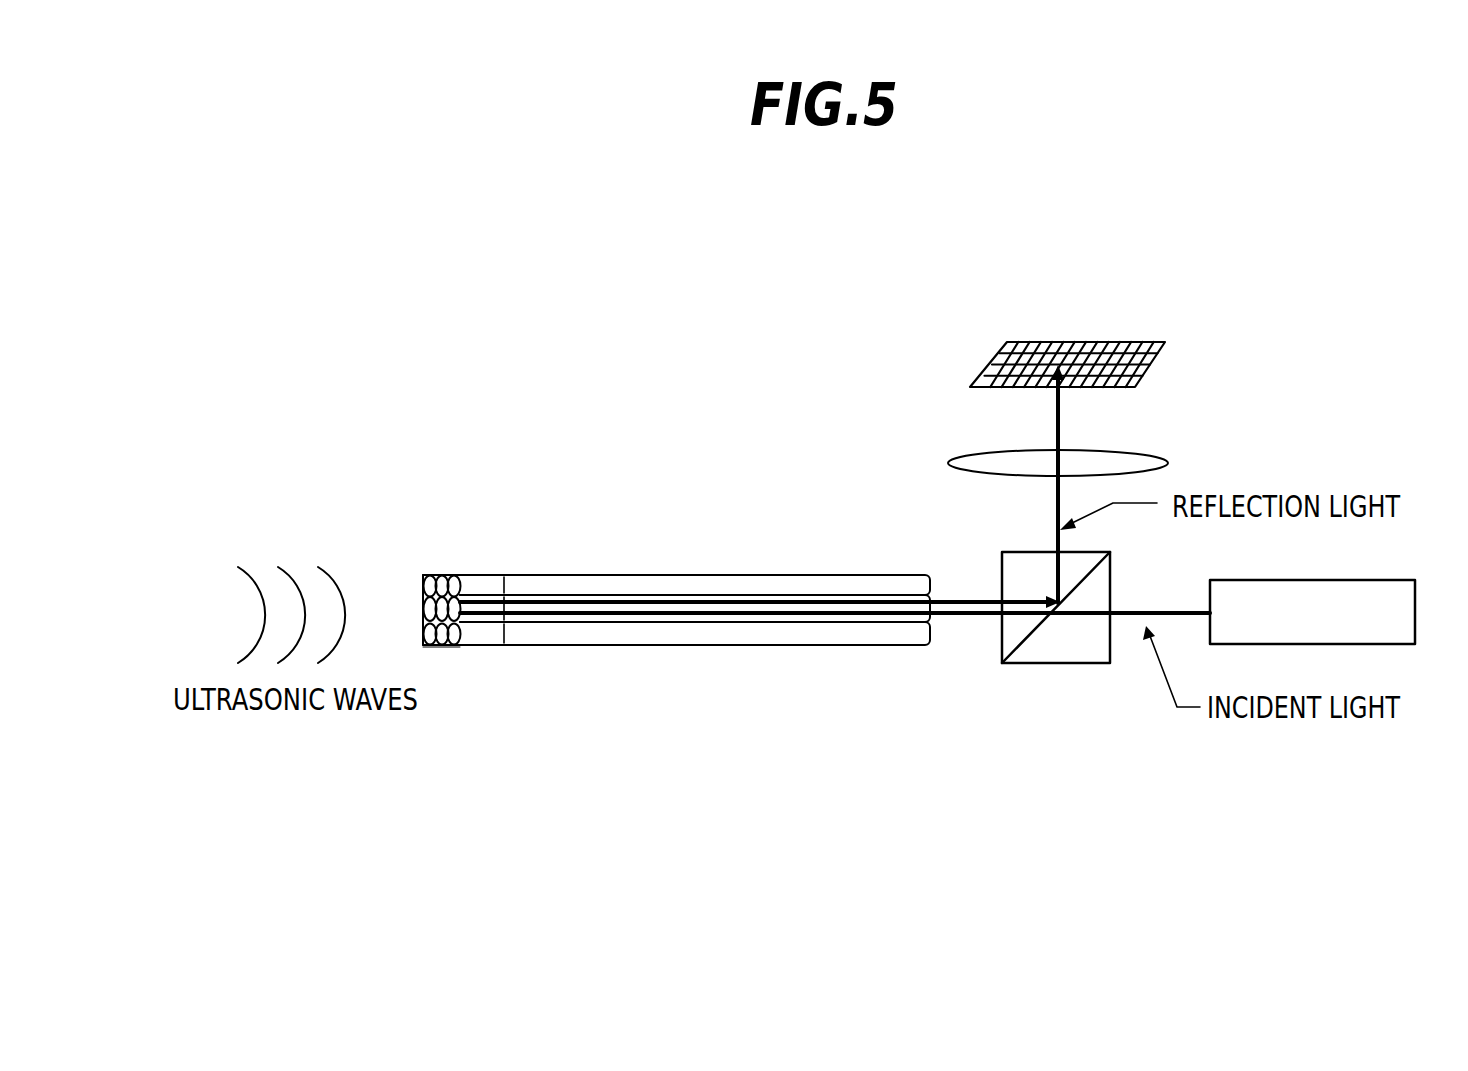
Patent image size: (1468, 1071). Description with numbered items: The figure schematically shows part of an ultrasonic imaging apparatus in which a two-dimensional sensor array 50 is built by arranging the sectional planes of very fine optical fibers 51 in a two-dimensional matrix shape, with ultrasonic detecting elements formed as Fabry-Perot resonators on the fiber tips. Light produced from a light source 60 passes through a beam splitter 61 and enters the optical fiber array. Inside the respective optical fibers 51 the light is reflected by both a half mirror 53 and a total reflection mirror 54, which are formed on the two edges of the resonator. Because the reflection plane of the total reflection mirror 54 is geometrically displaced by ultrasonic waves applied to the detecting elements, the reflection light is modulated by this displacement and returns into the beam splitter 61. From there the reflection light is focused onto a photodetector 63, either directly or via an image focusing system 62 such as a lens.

The two-dimensional sensor array 50 is at (806, 641).
The optical fibers 51 is at (452, 577).
The half mirror 53 is at (502, 665).
The total reflection mirror 54 is at (453, 665).
The light source 60 is at (1390, 580).
The beam splitter 61 is at (1050, 652).
The image focusing system 62 is at (1150, 451).
The photodetector 63 is at (1143, 341).